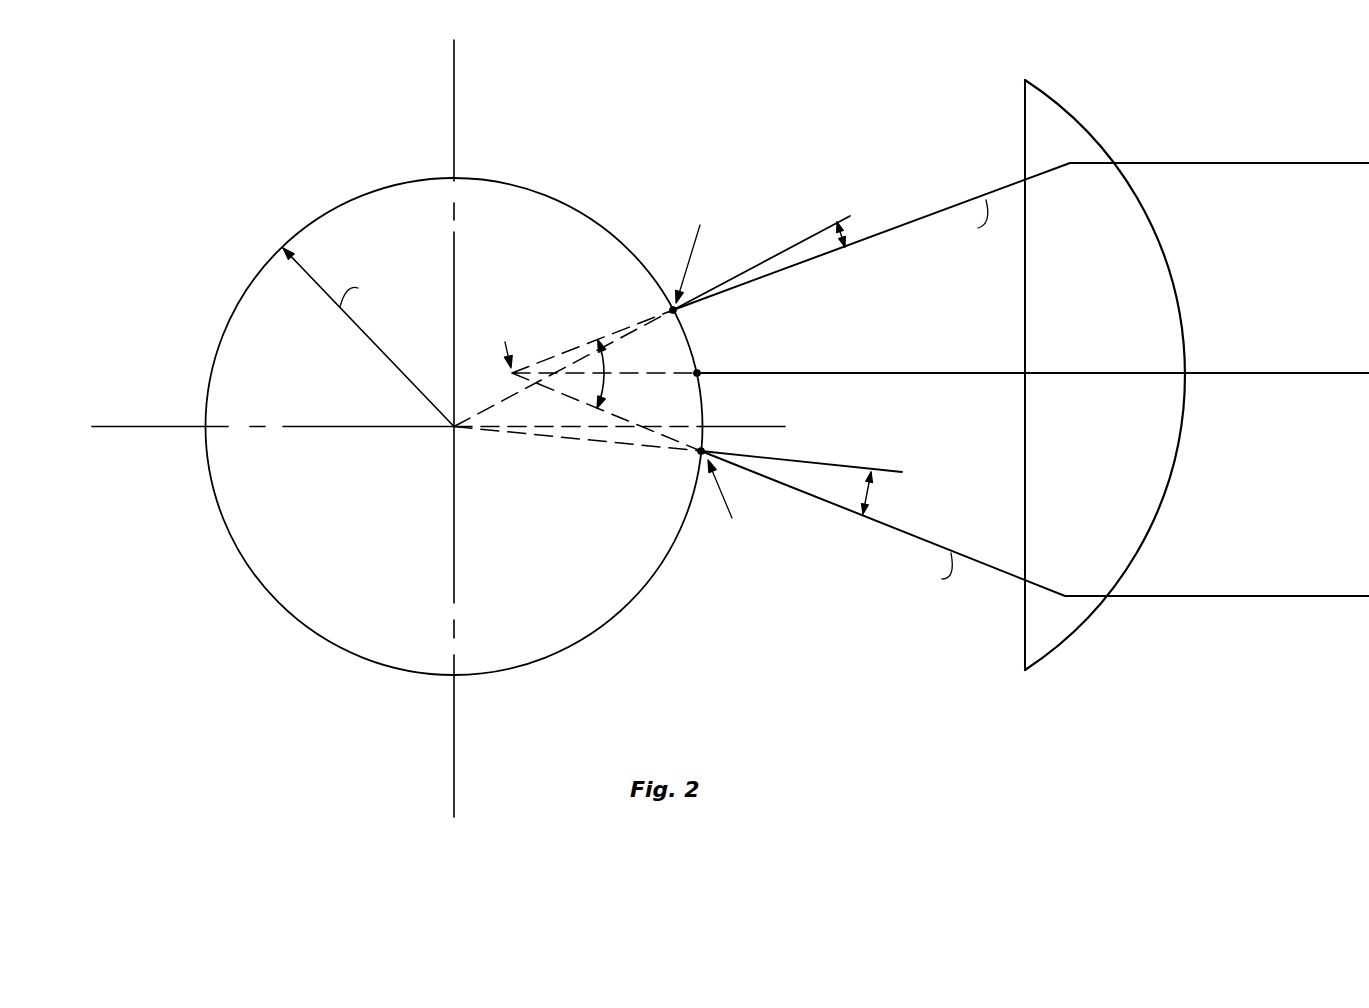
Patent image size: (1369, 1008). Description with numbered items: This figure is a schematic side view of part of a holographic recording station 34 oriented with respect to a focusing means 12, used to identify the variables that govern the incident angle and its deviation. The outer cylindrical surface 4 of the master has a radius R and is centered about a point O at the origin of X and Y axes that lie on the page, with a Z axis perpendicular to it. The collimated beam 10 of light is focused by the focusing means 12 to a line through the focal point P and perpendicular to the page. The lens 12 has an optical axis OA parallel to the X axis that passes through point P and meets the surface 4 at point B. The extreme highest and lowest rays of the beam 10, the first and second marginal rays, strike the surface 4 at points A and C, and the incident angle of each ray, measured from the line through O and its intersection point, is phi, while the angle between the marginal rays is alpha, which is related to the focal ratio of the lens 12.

The holographic recording station 34 is at (278, 153).
The outer cylindrical surface 4 is at (560, 203).
The focusing means 12 is at (1176, 112).
The collimated beam 10 is at (1231, 610).